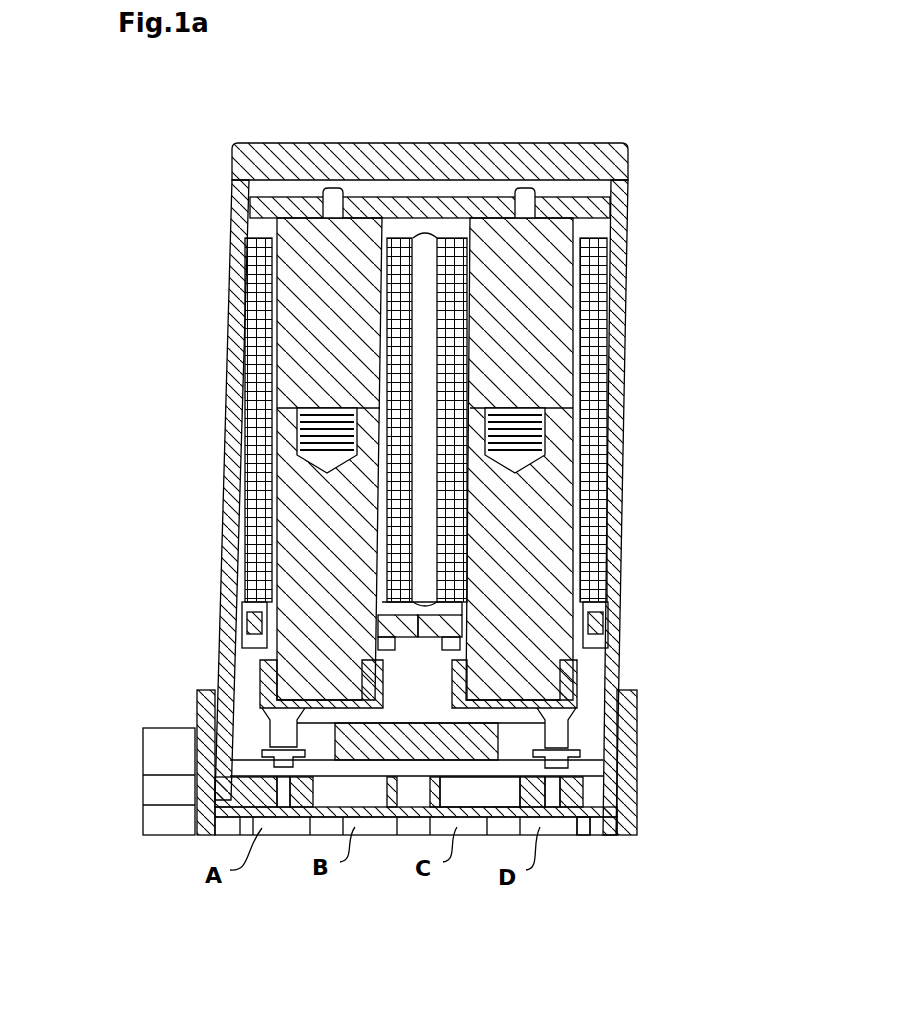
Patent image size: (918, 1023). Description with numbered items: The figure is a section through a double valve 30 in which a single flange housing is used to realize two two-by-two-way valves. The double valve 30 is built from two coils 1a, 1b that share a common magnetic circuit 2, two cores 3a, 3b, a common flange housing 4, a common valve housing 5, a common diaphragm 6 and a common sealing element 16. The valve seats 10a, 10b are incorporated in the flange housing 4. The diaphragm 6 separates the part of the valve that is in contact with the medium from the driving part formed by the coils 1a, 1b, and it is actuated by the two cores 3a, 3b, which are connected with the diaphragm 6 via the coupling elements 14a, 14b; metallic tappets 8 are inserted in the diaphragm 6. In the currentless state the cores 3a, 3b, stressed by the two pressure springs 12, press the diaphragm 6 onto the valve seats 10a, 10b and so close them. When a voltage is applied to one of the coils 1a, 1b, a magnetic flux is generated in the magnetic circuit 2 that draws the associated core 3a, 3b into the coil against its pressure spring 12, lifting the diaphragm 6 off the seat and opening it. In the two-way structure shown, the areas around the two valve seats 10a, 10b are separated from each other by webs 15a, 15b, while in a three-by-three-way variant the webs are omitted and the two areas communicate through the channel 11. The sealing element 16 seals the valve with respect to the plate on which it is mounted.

The double valve 30 is at (401, 457).
The common valve housing 5 is at (598, 160).
The common magnetic circuit 2 is at (297, 208).
The first coil 1a is at (243, 312).
The second coil 1b is at (595, 302).
The first core 3a is at (307, 368).
The second core 3b is at (537, 358).
The pressure spring 12 is at (300, 430).
The first coupling element 14a is at (258, 672).
The second coupling element 14b is at (572, 675).
The metallic tappet 8 is at (287, 745).
The common diaphragm 6 is at (605, 770).
The common flange housing 4 is at (606, 794).
The first valve seat 10a is at (281, 783).
The second valve seat 10b is at (548, 785).
The first web 15a is at (385, 790).
The second web 15b is at (430, 790).
The channel 11 is at (477, 787).
The common sealing element 16 is at (583, 827).